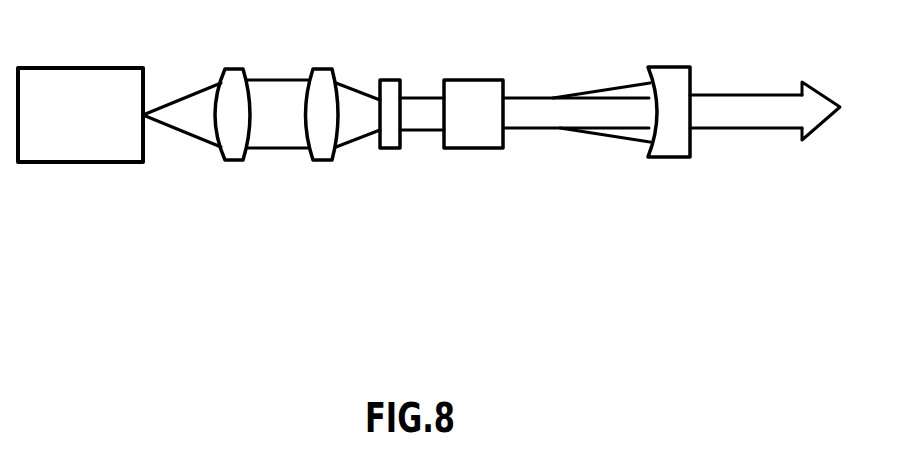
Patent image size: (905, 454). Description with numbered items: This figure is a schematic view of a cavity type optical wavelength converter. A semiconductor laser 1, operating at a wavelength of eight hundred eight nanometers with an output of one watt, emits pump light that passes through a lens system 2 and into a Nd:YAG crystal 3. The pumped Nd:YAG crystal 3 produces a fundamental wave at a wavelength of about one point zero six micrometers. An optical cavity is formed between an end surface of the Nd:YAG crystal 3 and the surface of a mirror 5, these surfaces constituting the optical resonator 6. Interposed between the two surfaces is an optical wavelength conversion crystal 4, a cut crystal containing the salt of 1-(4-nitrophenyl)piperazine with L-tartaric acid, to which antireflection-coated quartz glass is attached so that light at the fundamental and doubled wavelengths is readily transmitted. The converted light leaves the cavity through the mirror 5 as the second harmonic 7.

The semiconductor laser 1 is at (88, 163).
The lens system 2 is at (328, 185).
The Nd:YAG crystal 3 is at (387, 150).
The optical wavelength conversion crystal 4 is at (478, 148).
The mirror 5 is at (668, 140).
The optical resonator 6 is at (392, 80).
The second harmonic 7 is at (810, 117).